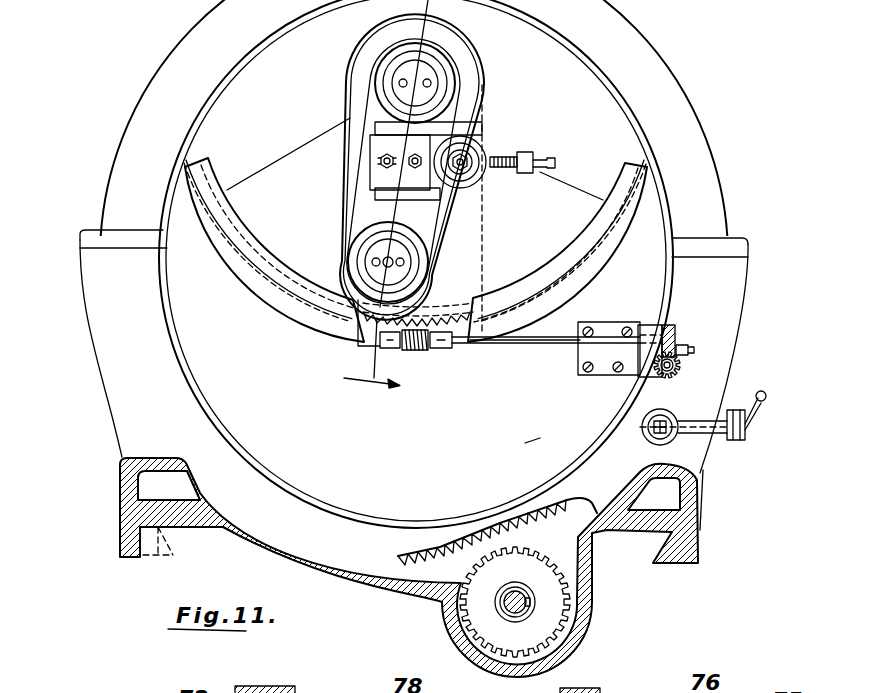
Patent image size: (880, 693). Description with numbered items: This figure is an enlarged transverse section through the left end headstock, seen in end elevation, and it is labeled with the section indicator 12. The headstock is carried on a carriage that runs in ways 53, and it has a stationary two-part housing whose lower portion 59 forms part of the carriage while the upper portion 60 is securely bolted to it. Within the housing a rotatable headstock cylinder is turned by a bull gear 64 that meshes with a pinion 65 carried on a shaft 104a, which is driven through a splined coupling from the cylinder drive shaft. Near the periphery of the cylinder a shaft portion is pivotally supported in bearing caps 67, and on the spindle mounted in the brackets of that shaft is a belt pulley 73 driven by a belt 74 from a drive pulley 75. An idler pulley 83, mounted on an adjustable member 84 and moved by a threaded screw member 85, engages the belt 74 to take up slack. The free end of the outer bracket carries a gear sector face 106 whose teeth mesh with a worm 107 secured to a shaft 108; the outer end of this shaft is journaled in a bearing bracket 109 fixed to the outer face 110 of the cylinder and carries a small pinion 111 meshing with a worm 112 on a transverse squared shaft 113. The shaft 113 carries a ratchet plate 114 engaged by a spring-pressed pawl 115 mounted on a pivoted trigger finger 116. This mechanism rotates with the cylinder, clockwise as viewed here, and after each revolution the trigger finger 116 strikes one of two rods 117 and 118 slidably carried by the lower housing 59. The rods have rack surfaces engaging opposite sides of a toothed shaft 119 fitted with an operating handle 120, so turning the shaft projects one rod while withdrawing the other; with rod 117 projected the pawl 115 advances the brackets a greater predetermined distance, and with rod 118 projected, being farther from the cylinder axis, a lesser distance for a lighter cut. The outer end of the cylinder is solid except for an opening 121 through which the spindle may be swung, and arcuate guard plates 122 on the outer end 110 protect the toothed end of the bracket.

The section line 12 is at (349, 354).
The ways 53 is at (122, 555).
The housing portion 59 is at (742, 278).
The housing portion 60 is at (167, 63).
The bull gear 64 is at (398, 558).
The pinion 65 is at (556, 598).
The bearing caps 67 is at (348, 90).
The belt pulley 73 is at (418, 258).
The belt 74 is at (346, 222).
The drive pulley 75 is at (455, 83).
The idler pulley 83 is at (490, 180).
The adjustable member 84 is at (378, 183).
The threaded screw member 85 is at (500, 158).
The shaft 104a is at (524, 607).
The gear sector face 106 is at (460, 352).
The worm 107 is at (418, 352).
The shaft 108 is at (520, 344).
The bearing bracket 109 is at (630, 322).
The outer face 110 is at (528, 442).
The small pinion 111 is at (655, 330).
The worm 112 is at (670, 350).
The squared shaft 113 is at (672, 378).
The ratchet plate 114 is at (655, 432).
The spring-pressed pawl 115 is at (673, 350).
The trigger finger 116 is at (684, 362).
The rod 117 is at (742, 434).
The rod 118 is at (703, 475).
The toothed shaft 119 is at (728, 442).
The operating handle 120 is at (760, 415).
The opening 121 is at (283, 160).
The arcuate guard plates 122 is at (185, 185).